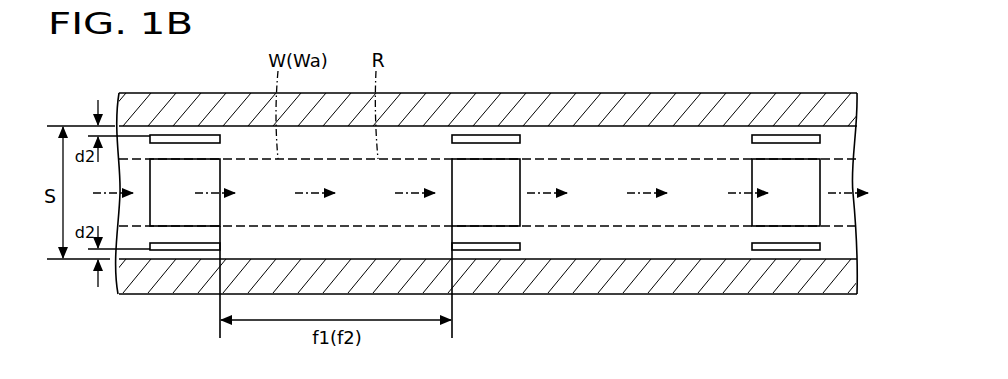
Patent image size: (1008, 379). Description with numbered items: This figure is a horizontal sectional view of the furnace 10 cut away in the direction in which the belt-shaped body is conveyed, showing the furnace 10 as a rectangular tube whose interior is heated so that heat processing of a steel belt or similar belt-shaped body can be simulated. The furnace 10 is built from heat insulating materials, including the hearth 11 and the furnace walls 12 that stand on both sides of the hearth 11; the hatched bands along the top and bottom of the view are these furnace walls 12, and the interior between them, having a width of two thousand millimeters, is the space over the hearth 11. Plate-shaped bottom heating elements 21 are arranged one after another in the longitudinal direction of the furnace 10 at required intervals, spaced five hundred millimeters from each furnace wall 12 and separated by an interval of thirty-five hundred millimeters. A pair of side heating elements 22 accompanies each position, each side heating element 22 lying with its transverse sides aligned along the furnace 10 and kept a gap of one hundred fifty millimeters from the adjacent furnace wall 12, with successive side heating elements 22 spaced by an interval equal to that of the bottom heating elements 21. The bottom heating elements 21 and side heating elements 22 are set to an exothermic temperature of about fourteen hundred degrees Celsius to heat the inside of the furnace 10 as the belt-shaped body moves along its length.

The furnace 10 is at (807, 84).
The hearth 11 is at (604, 240).
The furnace walls 12 is at (682, 106).
The bottom heating elements 21 is at (165, 212).
The side heating elements 22 is at (186, 135).